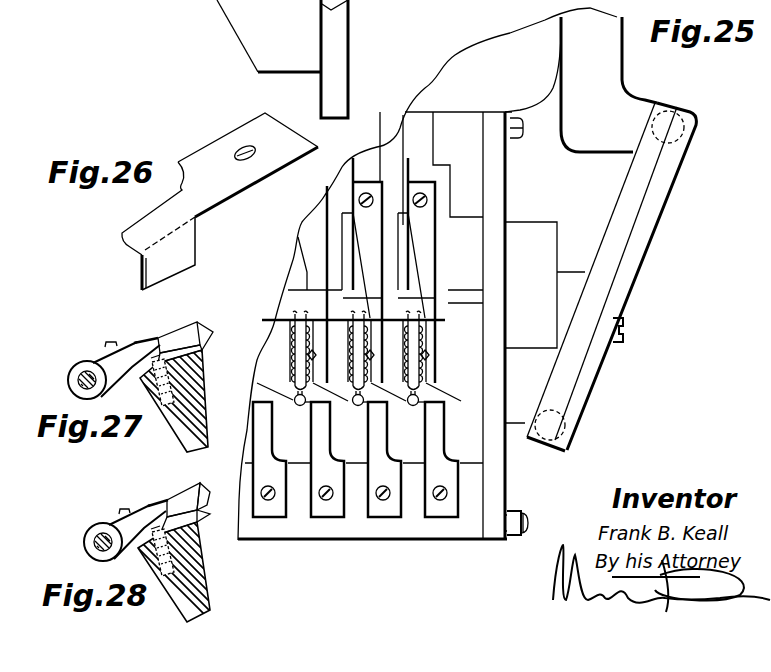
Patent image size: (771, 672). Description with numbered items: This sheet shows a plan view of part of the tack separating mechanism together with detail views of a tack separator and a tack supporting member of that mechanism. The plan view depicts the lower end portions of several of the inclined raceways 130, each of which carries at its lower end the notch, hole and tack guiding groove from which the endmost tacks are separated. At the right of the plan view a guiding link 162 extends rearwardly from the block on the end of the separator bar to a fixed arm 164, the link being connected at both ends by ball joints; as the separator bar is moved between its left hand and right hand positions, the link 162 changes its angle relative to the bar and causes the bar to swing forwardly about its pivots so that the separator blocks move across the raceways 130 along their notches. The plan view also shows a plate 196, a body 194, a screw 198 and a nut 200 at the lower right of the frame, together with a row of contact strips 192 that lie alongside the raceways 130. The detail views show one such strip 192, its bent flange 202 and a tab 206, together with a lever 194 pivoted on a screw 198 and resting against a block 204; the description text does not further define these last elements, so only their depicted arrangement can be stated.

In FIG. 25, the raceway 130 is at (350, 372).
In FIG. 25, the guiding link 162 is at (658, 205).
In FIG. 25, the fixed arm 164 is at (613, 77).
In FIG. 25, the contact strip 192 is at (437, 513).
In FIG. 26, the contact strip 192 is at (210, 156).
In FIG. 27, the contact strip 192 is at (143, 338).
In FIG. 28, the contact strip 192 is at (157, 504).
In FIG. 25, the lever 194 is at (461, 534).
In FIG. 27, the lever 194 is at (100, 361).
In FIG. 28, the lever 194 is at (120, 522).
In FIG. 25, the plate 196 is at (498, 378).
In FIG. 25, the pivot screw 198 is at (529, 521).
In FIG. 27, the pivot screw 198 is at (78, 381).
In FIG. 28, the pivot screw 198 is at (93, 541).
In FIG. 25, the nut 200 is at (513, 506).
In FIG. 26, the flange 202 is at (190, 248).
In FIG. 27, the flange 202 is at (195, 328).
In FIG. 28, the flange 202 is at (186, 496).
In FIG. 27, the block 204 is at (192, 357).
In FIG. 28, the block 204 is at (190, 530).
In FIG. 28, the tab 206 is at (204, 489).